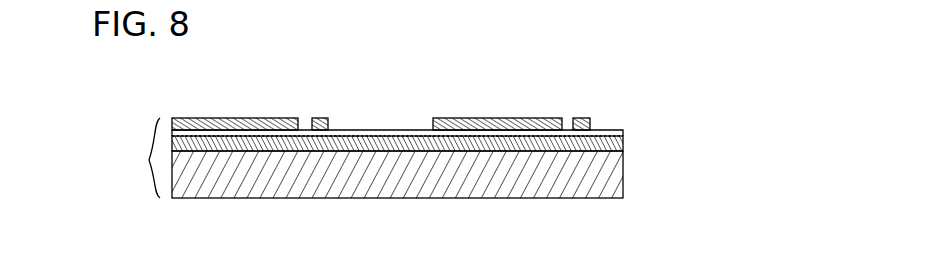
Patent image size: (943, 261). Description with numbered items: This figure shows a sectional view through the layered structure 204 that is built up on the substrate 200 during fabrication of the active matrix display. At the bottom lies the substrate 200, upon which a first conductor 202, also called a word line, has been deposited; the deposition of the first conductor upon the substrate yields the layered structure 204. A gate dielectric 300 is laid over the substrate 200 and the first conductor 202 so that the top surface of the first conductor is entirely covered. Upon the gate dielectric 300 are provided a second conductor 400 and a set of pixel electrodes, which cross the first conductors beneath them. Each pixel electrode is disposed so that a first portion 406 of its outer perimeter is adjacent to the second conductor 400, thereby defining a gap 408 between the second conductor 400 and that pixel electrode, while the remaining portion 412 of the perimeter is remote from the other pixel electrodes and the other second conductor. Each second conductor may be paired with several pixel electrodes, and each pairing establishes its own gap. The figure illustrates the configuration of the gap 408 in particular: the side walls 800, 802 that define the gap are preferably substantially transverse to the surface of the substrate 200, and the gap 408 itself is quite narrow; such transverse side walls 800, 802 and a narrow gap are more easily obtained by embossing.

The substrate 200 is at (623, 190).
The first conductor 202 is at (623, 147).
The layered structure 204 is at (133, 158).
The gate dielectric 300 is at (623, 133).
The second conductor 400 is at (592, 120).
The first portion of outer perimeter 406 is at (572, 116).
The gap 408 is at (570, 117).
The remaining portion of outer perimeter 412 is at (433, 118).
The side wall 800 is at (565, 122).
The side wall 802 is at (569, 122).